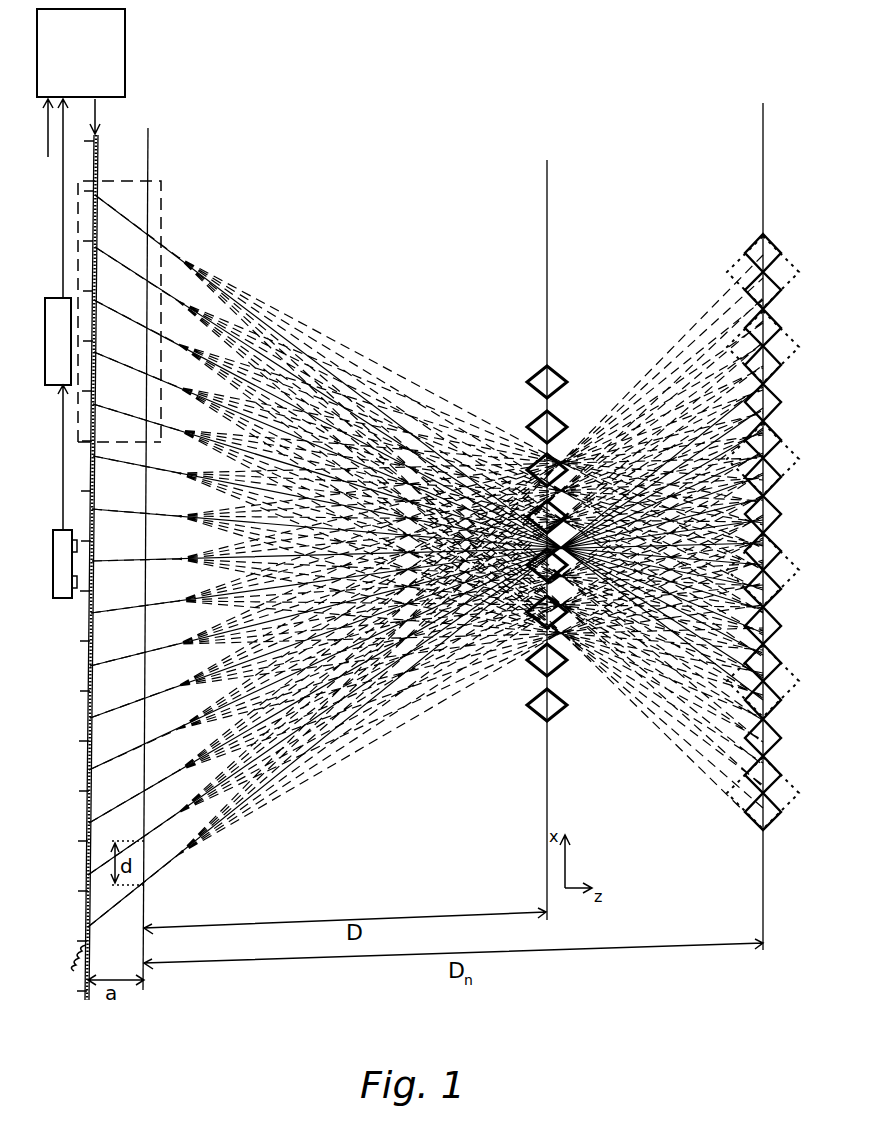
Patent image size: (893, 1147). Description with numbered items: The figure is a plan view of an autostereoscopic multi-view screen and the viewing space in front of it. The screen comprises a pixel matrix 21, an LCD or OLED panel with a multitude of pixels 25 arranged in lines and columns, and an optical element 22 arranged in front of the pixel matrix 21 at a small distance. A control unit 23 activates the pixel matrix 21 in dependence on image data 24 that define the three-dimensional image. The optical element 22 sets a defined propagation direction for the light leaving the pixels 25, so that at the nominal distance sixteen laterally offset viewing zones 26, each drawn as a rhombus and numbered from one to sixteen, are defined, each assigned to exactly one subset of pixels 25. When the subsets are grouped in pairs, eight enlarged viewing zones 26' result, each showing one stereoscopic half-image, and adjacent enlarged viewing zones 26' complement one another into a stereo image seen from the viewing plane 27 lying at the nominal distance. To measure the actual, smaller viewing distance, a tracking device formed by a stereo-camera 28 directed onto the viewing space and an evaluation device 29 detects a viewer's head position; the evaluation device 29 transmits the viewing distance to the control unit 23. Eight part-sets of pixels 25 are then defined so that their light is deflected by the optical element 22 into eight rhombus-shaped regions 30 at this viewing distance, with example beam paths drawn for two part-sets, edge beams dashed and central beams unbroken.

The pixel matrix 21 is at (88, 1000).
The optical element 22 is at (146, 900).
The control unit 23 is at (127, 25).
The image data 24 is at (48, 157).
The pixels 25 is at (78, 957).
The viewing zones 26 is at (743, 531).
The enlarged viewing zones 26' is at (732, 532).
The viewing plane 27 is at (761, 160).
The stereo-camera 28 is at (56, 598).
The evaluation device 29 is at (55, 298).
The regions 30 is at (530, 372).